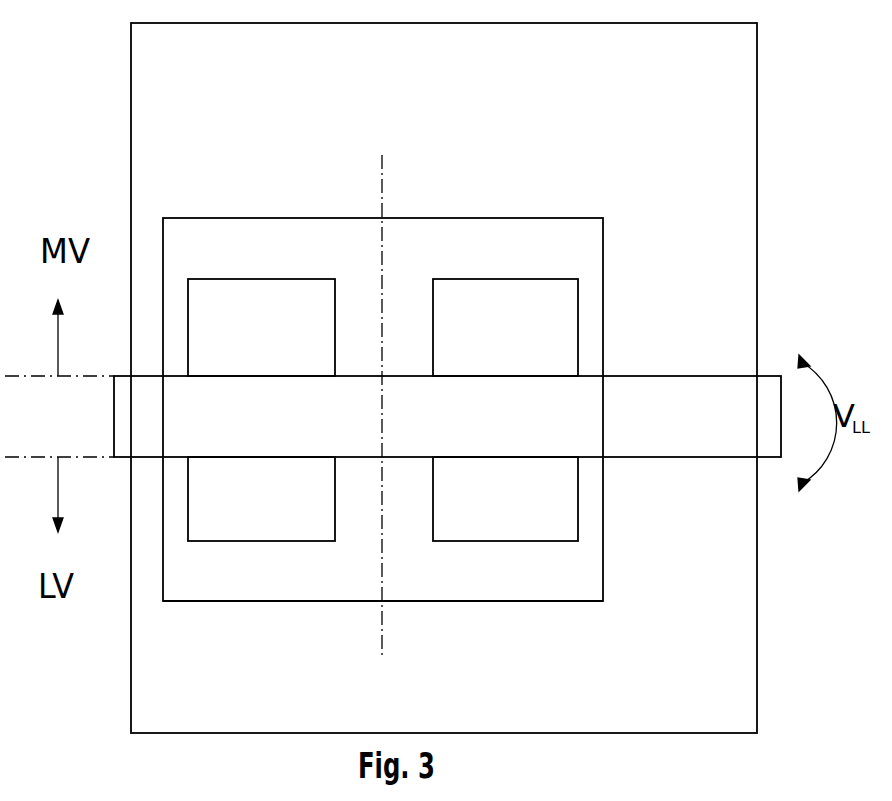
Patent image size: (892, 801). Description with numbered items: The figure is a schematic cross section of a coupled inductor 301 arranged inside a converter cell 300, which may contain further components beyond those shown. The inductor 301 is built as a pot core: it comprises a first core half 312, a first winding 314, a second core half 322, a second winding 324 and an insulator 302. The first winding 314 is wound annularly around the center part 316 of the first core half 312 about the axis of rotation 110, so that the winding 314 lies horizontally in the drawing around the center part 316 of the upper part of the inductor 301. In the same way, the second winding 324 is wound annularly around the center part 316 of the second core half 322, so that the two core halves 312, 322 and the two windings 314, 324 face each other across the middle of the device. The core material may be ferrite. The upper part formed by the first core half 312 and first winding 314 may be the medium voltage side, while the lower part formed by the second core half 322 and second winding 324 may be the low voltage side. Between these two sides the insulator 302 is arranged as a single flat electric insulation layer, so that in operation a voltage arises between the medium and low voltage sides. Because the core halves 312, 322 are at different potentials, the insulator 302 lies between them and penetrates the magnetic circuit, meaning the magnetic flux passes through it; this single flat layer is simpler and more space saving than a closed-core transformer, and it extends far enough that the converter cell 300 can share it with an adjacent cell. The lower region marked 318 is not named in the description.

The converter cell 300 is at (757, 117).
The coupled inductor 301 is at (666, 193).
The insulator 302 is at (590, 376).
The axis of rotation 110 is at (382, 185).
The first core half 312 is at (562, 218).
The first winding 314 is at (458, 278).
The center part 316 is at (361, 252).
The lower left stator section 318 is at (365, 548).
The second core half 322 is at (560, 601).
The second winding 324 is at (453, 541).